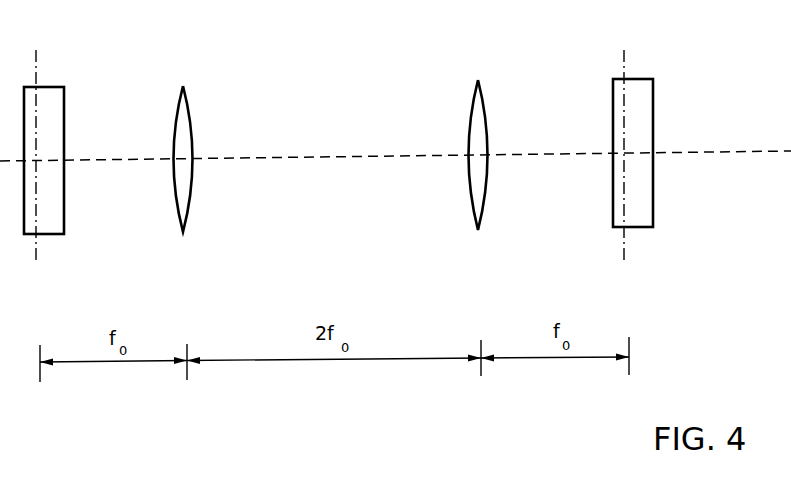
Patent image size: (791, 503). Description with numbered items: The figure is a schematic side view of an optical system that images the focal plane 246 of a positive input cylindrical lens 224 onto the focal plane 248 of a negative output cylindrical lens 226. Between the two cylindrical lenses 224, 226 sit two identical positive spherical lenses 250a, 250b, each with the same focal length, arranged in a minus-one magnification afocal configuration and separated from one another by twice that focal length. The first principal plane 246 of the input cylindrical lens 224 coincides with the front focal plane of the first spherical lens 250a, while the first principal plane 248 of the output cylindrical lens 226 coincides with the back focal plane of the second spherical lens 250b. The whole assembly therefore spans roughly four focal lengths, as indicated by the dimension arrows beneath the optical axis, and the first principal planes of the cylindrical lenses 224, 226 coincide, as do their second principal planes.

The positive input cylindrical lens 224 is at (43, 236).
The negative output cylindrical lens 226 is at (632, 228).
The focal plane of the input cylindrical lens 246 is at (36, 62).
The focal plane of the output cylindrical lens 248 is at (624, 62).
The first spherical lens 250a is at (183, 86).
The second spherical lens 250b is at (478, 80).